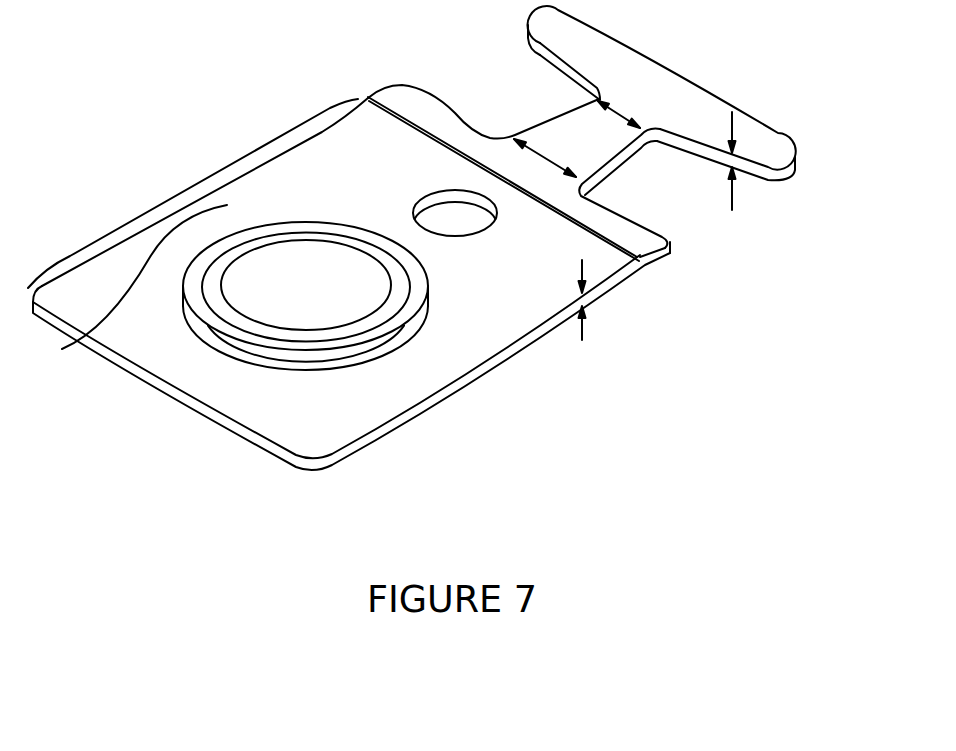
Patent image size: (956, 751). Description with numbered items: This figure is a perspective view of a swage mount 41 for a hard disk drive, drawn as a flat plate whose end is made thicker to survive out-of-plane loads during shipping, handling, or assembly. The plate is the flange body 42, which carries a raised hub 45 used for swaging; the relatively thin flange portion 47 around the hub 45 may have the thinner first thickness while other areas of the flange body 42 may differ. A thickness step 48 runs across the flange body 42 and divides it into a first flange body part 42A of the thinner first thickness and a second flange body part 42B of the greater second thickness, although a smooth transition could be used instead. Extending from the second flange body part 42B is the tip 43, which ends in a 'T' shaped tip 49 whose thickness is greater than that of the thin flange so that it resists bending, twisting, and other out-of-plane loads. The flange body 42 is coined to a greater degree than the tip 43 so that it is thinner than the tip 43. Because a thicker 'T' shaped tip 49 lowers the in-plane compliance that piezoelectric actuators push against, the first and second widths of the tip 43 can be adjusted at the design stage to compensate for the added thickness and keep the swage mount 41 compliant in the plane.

The swage mount 41 is at (311, 500).
The flange body 42 is at (512, 394).
The first flange body part 42A is at (214, 168).
The second flange body part 42B is at (409, 67).
The tip 43 is at (806, 182).
The hub 45 is at (205, 338).
The flange body (flange portion) 47 is at (62, 349).
The thickness step 48 is at (640, 264).
The 'T' shaped tip 49 is at (797, 171).